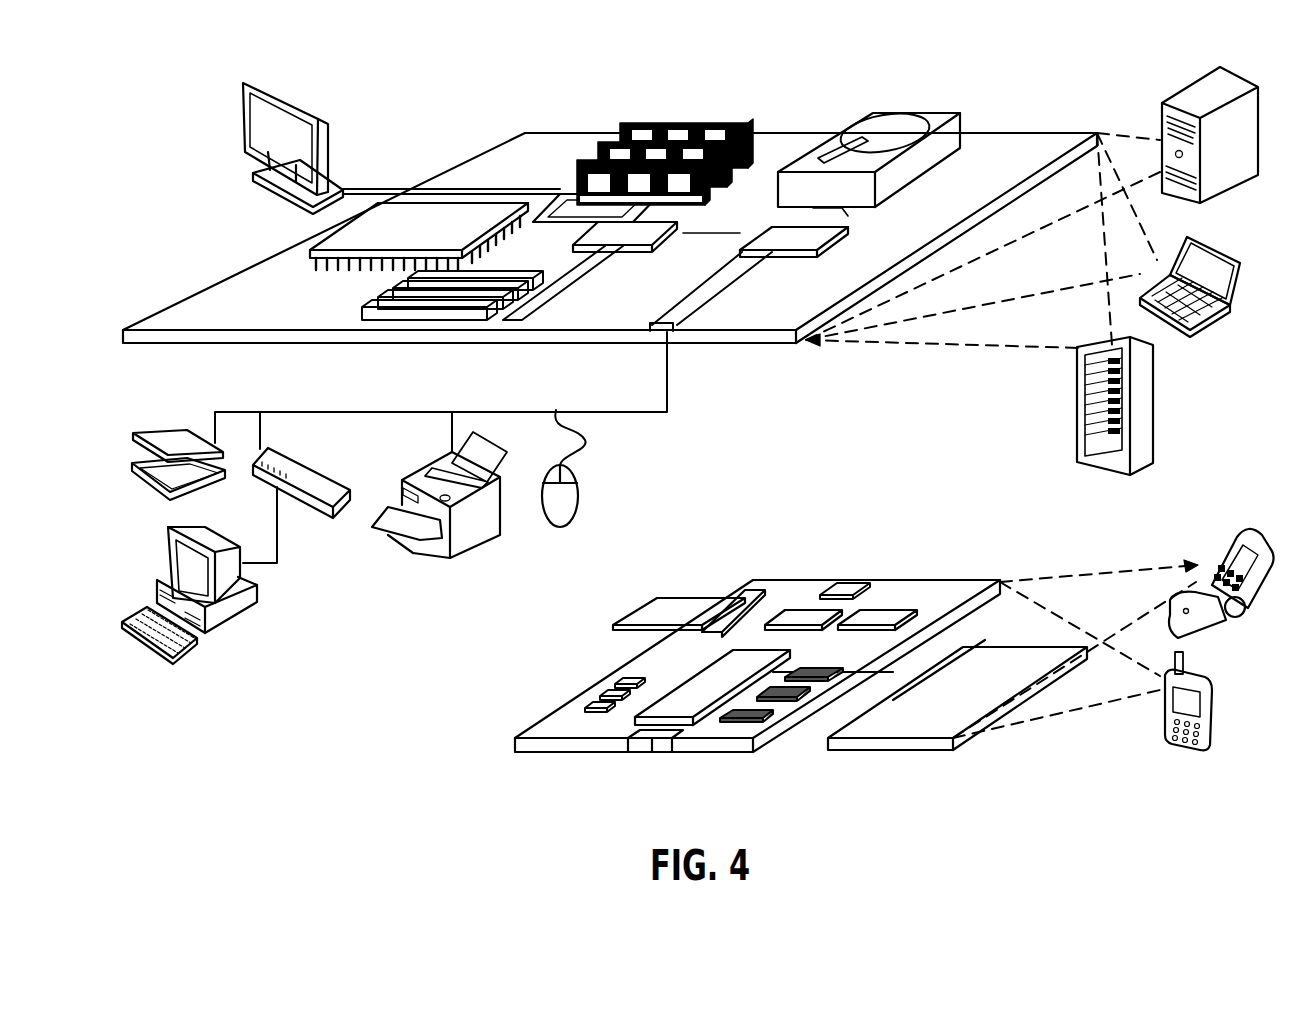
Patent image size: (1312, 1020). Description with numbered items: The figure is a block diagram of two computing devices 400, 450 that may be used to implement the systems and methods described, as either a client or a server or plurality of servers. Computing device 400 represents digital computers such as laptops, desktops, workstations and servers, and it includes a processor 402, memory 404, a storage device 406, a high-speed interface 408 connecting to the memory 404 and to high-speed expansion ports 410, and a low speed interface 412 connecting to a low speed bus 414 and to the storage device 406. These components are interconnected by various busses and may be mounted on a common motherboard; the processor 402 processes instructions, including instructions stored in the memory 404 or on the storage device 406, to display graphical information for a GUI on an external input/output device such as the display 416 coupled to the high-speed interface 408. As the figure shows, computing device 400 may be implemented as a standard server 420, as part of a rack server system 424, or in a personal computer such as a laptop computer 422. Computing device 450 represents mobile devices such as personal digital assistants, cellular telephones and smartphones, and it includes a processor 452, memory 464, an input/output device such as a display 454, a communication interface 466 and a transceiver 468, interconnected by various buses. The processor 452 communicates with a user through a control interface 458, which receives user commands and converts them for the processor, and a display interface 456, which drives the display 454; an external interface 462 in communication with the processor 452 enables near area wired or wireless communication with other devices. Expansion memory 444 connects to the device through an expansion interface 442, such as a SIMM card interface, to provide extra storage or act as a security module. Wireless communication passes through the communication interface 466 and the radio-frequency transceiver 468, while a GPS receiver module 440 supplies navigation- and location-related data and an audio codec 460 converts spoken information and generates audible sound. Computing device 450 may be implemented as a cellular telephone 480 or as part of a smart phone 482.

The computing device 400 is at (434, 108).
The processor 402 is at (310, 249).
The memory 404 is at (634, 124).
The storage device 406 is at (866, 112).
The high-speed interface 408 is at (600, 232).
The high-speed expansion ports 410 is at (378, 307).
The low speed interface 412 is at (772, 228).
The low speed bus 414 is at (669, 332).
The display 416 is at (245, 85).
The standard server 420 is at (1165, 116).
The laptop computer 422 is at (1240, 262).
The rack server system 424 is at (1078, 450).
The GPS receiver module 440 is at (855, 582).
The expansion interface 442 is at (742, 590).
The expansion memory 444 is at (660, 598).
The computing device 450 is at (491, 749).
The processor 452 is at (688, 707).
The display 454 is at (920, 720).
The display interface 456 is at (762, 727).
The control interface 458 is at (788, 692).
The audio codec 460 is at (812, 675).
The external interface 462 is at (653, 740).
The memory 464 is at (607, 703).
The communication interface 466 is at (805, 616).
The transceiver 468 is at (880, 620).
The cellular telephone 480 is at (1213, 550).
The smart phone 482 is at (1165, 716).